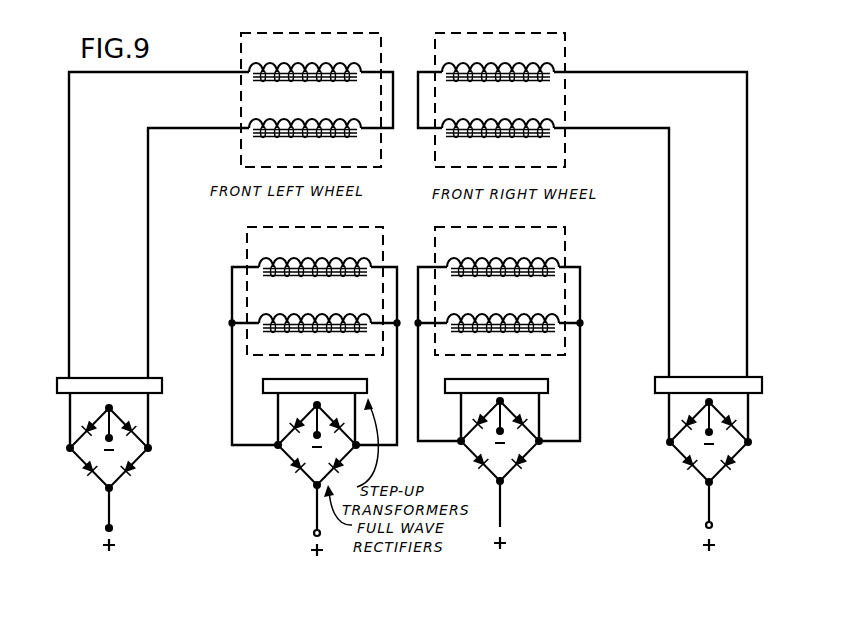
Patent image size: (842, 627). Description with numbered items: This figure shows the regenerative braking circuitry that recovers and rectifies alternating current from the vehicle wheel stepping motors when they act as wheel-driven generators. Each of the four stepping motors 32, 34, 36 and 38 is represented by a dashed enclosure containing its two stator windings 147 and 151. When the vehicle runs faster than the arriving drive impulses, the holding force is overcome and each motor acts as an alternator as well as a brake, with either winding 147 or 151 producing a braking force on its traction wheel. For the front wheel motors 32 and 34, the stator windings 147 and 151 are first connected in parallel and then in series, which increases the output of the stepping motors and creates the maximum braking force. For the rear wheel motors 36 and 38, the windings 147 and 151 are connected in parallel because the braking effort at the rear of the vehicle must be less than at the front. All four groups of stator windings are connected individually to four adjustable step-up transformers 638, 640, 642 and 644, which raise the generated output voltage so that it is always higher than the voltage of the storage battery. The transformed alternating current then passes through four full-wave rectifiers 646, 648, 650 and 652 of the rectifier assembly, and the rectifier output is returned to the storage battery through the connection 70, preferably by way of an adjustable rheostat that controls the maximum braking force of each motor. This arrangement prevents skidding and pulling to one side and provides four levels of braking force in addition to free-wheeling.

The front wheel stepping motor 32 is at (563, 34).
The front wheel stepping motor 34 is at (241, 45).
The rear wheel stepping motor 36 is at (565, 231).
The rear wheel stepping motor 38 is at (247, 231).
The stator winding 147 is at (295, 78).
The stator winding 151 is at (285, 134).
The adjustable step-up transformer 638 is at (109, 387).
The adjustable step-up transformer 640 is at (270, 387).
The adjustable step-up transformer 642 is at (547, 383).
The adjustable step-up transformer 644 is at (714, 380).
The full-wave rectifier 646 is at (70, 448).
The full-wave rectifier 648 is at (280, 448).
The full-wave rectifier 650 is at (460, 442).
The full-wave rectifier 652 is at (669, 443).
The connection 70 is at (113, 503).